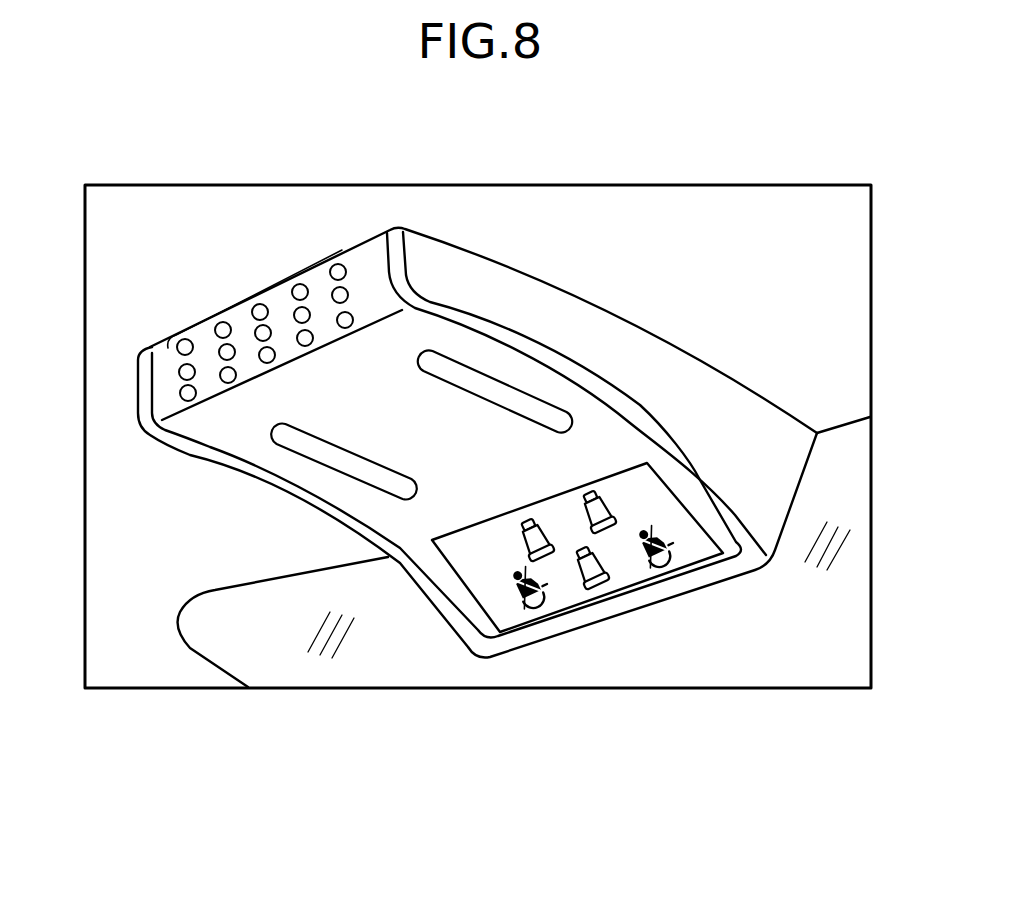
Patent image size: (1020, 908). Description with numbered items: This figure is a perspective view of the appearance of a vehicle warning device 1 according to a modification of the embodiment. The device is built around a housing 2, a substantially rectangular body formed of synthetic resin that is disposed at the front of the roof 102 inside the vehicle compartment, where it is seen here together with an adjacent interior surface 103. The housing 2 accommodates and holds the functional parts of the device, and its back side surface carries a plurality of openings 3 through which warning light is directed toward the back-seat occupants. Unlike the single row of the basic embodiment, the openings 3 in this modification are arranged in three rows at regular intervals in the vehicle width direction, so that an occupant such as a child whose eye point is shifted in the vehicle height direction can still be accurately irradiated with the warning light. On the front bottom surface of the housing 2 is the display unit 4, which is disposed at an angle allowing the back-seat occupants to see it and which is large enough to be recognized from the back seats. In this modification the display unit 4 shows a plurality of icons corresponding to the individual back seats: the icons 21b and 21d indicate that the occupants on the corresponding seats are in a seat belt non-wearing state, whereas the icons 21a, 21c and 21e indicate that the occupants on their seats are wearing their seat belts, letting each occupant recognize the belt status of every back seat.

The vehicle warning device 1 is at (484, 230).
The housing 2 is at (560, 315).
The openings 3 is at (262, 284).
The display unit 4 is at (651, 490).
The icon 21a is at (552, 568).
The icon 21b is at (536, 625).
The icon 21c is at (599, 598).
The icon 21d is at (665, 580).
The icon 21e is at (611, 542).
The roof 102 is at (665, 230).
The pillar 103 is at (846, 456).